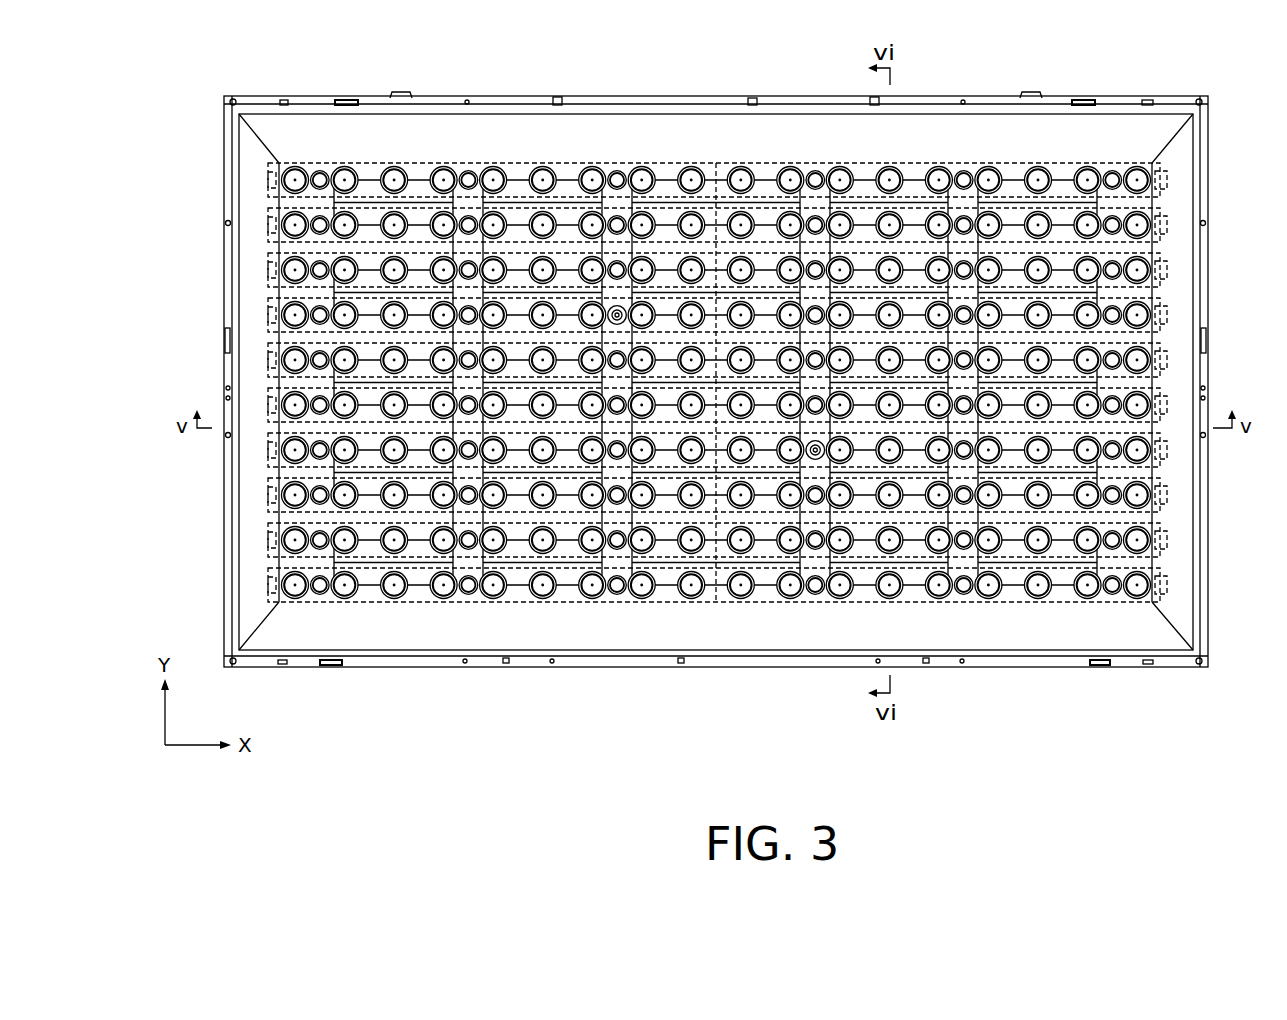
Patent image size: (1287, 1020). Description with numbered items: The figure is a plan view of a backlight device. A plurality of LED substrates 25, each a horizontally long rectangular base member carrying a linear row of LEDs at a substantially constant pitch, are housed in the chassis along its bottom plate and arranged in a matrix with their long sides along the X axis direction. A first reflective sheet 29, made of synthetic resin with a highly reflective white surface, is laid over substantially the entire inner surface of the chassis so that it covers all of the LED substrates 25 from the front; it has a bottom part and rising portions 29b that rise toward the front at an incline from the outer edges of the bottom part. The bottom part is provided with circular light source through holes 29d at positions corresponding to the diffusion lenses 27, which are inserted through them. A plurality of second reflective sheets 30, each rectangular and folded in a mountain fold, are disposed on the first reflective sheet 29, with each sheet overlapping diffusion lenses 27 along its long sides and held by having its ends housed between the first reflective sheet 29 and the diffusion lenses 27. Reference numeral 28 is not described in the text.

The LED substrate 25 is at (268, 225).
The diffusion lens 27 is at (343, 168).
The screws 28 is at (814, 268).
The first reflective sheet 29 is at (1115, 560).
The rising portion 29b is at (617, 137).
The light source through hole 29d is at (686, 586).
The second reflective sheet 30 is at (568, 168).